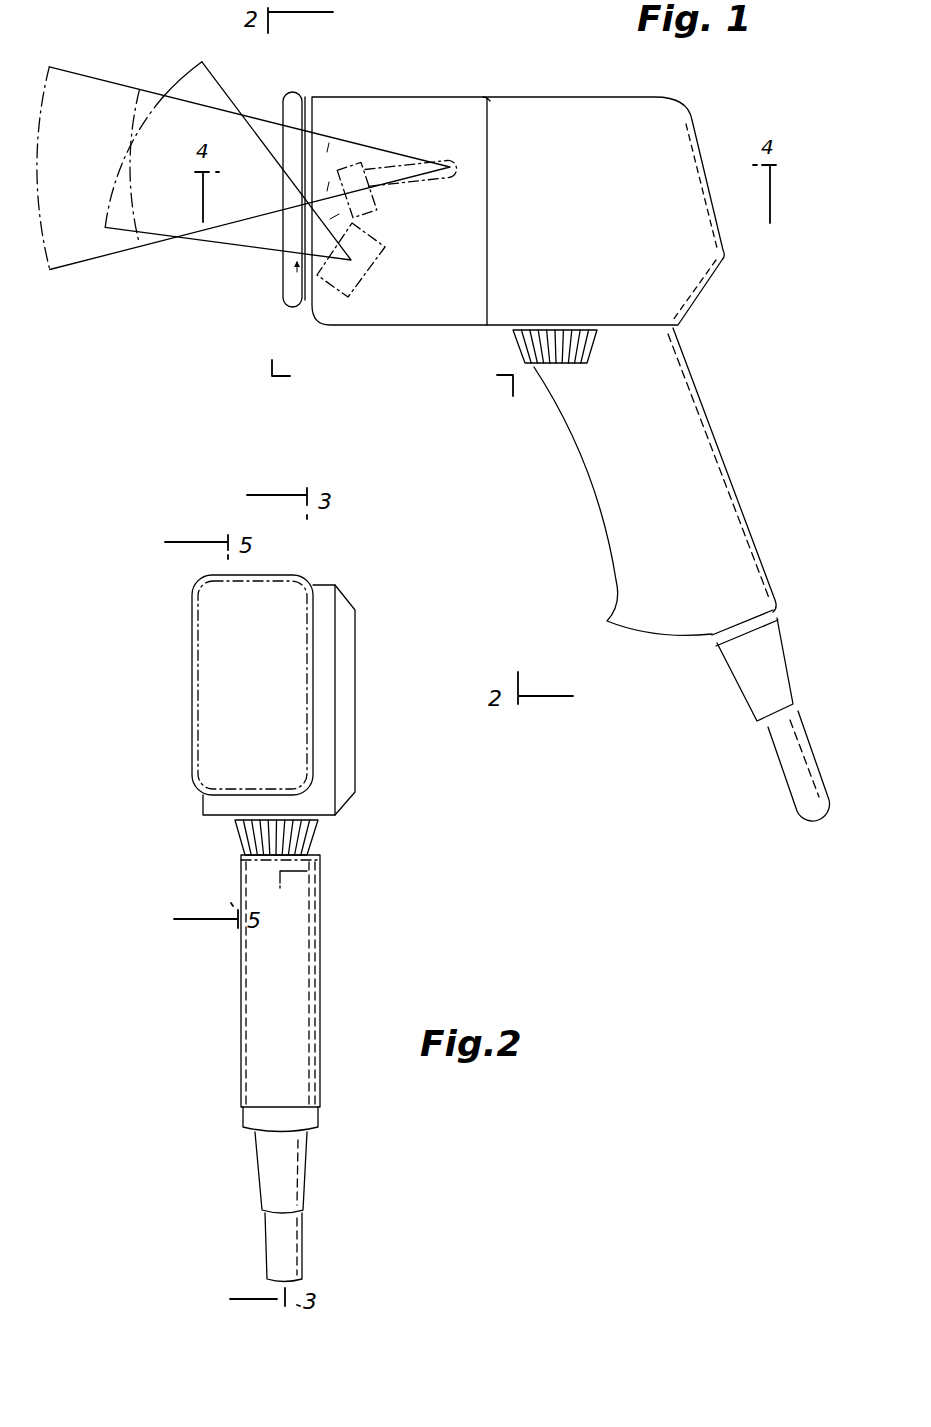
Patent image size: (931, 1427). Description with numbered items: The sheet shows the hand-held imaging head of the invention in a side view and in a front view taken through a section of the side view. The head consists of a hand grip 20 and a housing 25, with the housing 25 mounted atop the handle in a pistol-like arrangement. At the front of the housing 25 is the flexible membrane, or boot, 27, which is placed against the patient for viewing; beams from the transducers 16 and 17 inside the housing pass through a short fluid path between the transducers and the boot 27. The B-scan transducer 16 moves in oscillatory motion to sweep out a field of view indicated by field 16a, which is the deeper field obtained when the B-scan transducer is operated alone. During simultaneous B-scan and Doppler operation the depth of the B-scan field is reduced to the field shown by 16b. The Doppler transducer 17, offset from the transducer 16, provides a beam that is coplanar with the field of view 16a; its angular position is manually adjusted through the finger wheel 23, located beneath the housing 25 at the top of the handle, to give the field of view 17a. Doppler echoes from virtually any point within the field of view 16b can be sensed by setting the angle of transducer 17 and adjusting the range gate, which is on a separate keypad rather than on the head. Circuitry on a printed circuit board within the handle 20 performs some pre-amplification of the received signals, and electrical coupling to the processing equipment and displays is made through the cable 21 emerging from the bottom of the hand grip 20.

In FIG. 1, the B-scan transducer 16 is at (397, 168).
In FIG. 1, the field of view 16a is at (84, 73).
In FIG. 1, the field of view 16b is at (133, 107).
In FIG. 1, the Doppler transducer 17 is at (367, 262).
In FIG. 1, the field of view 17a is at (213, 248).
In FIG. 1, the hand grip 20 is at (581, 451).
In FIG. 2, the hand grip 20 is at (317, 980).
In FIG. 1, the cable 21 is at (798, 793).
In FIG. 2, the cable 21 is at (302, 1245).
In FIG. 1, the finger wheel 23 is at (520, 345).
In FIG. 2, the finger wheel 23 is at (240, 838).
In FIG. 1, the housing 25 is at (590, 104).
In FIG. 2, the housing 25 is at (357, 710).
In FIG. 1, the flexible membrane 27 is at (278, 103).
In FIG. 2, the flexible membrane 27 is at (252, 685).